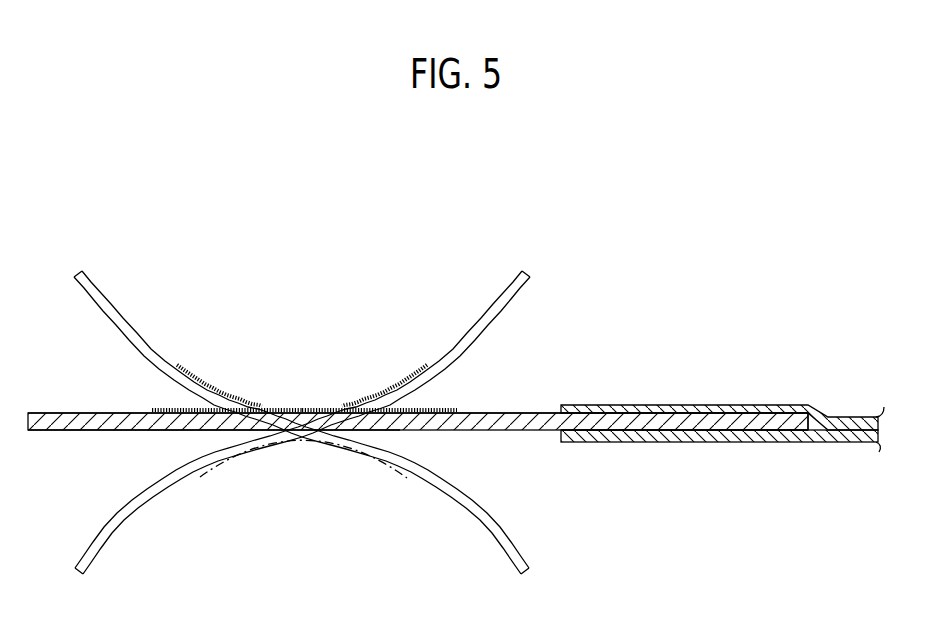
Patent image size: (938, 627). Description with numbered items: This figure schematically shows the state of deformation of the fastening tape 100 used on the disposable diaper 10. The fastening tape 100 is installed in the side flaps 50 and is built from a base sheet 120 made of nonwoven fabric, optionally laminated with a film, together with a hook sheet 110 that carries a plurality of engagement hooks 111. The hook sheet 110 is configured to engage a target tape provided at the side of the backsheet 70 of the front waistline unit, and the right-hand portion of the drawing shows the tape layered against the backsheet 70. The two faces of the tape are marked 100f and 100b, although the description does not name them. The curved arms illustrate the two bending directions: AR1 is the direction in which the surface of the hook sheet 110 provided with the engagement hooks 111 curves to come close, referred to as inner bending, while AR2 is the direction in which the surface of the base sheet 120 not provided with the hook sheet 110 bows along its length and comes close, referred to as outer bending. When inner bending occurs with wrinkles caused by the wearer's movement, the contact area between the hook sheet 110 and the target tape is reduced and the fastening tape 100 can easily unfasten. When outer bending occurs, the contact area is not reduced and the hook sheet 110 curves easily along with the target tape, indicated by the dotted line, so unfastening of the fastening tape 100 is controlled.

The disposable diaper 10 is at (722, 379).
The side flaps 50 is at (696, 404).
The backsheet 70 is at (735, 443).
The fastening tape 100 is at (94, 398).
The front surface of sheet 100f is at (84, 431).
The back surface of sheet 100b is at (663, 430).
The hook sheet 110 is at (425, 405).
The engagement hooks 111 is at (178, 410).
The base sheet 120 is at (503, 412).
The inner bending direction AR1 is at (122, 302).
The outer bending direction AR2 is at (122, 540).